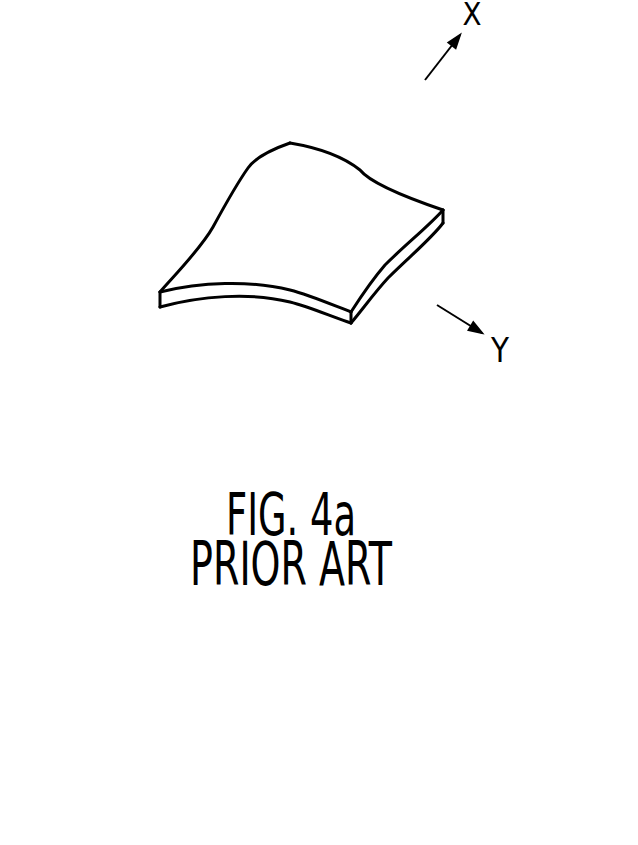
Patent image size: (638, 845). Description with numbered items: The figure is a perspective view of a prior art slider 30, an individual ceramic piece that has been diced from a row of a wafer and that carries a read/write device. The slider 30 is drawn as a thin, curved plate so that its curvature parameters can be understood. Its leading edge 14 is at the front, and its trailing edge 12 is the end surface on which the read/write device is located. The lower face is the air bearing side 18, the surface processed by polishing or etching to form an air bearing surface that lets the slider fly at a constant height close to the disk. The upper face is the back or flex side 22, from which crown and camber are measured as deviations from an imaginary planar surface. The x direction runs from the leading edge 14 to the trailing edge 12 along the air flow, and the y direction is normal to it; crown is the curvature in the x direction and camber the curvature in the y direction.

The trailing edge 12 is at (281, 246).
The leading edge 14 is at (212, 292).
The air bearing side 18 is at (295, 312).
The back or flex side 22 is at (267, 177).
The slider 30 is at (254, 246).